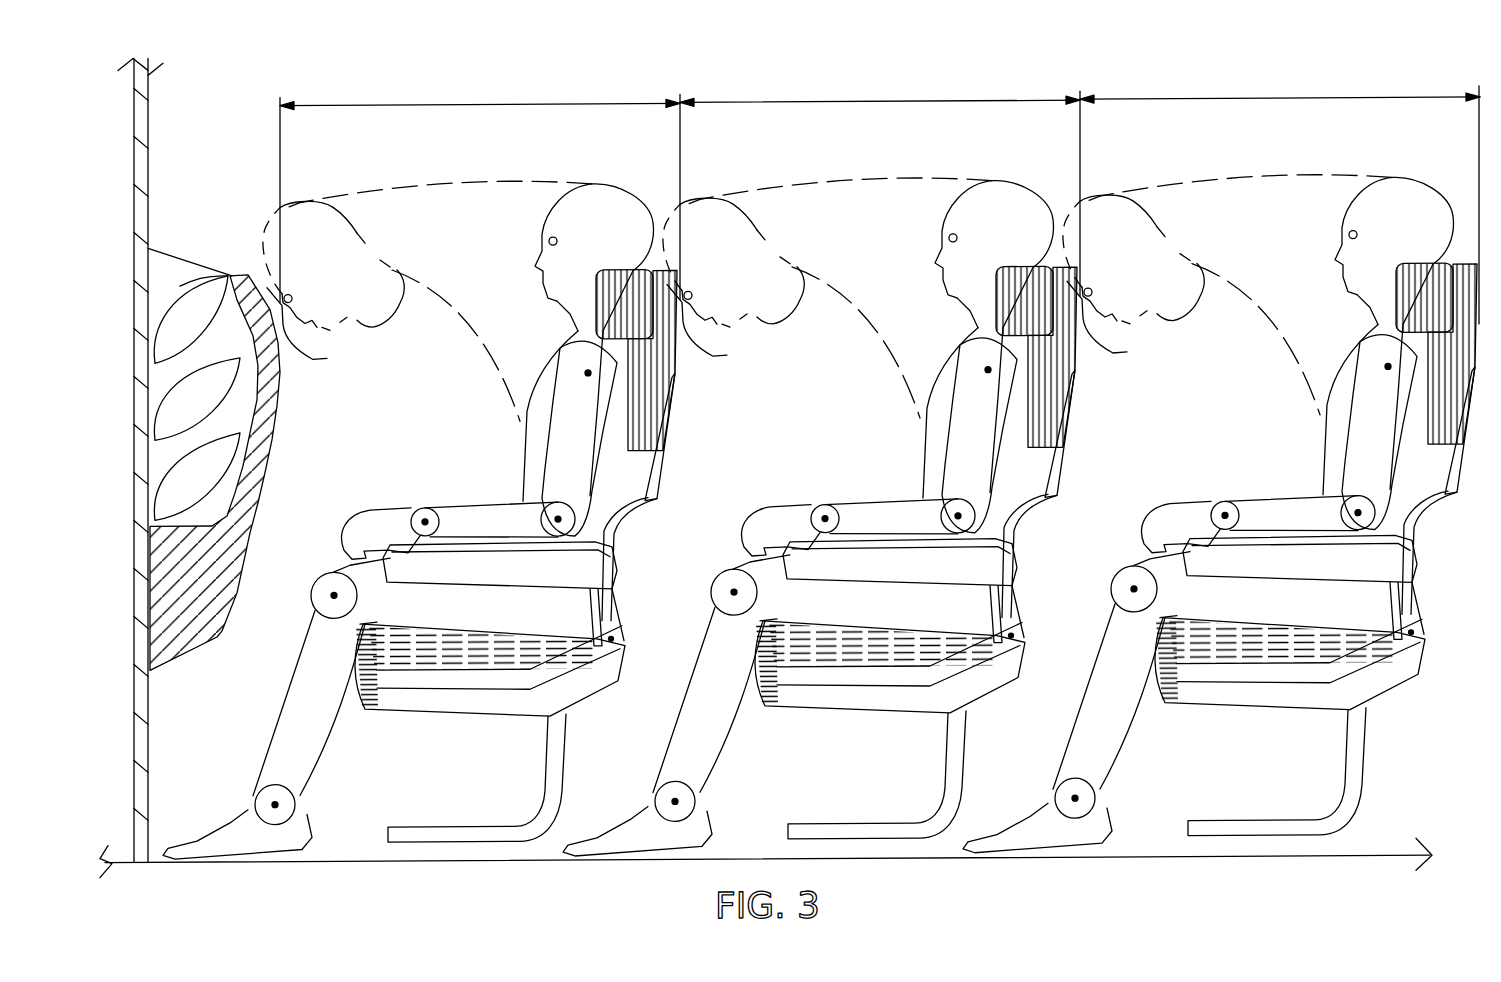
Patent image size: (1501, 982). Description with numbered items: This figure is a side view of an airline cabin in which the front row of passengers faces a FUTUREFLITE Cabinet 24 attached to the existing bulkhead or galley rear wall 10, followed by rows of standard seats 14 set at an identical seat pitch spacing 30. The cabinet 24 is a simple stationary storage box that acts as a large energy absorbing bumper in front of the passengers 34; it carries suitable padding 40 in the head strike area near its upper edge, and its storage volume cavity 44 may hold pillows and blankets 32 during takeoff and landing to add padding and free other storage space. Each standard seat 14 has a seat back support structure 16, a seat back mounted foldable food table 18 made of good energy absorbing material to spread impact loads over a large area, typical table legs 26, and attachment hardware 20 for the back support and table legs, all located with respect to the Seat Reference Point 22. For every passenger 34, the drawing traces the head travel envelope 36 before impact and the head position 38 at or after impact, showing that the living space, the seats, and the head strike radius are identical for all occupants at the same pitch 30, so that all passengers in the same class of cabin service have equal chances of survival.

The bulkhead or galley rear wall 10 is at (148, 187).
The standard seat 14 is at (890, 690).
The seat back support structure 16 is at (680, 372).
The seat back mounted foldable food table 18 is at (667, 433).
The attachment hardware for back support and table legs 20 is at (625, 613).
The Seat Reference Point (SRP) 22 is at (618, 640).
The FUTUREFLITE Cabinet 24 is at (280, 438).
The legs, food table 26 is at (653, 507).
The seat pitch spacing 30 is at (880, 191).
The pillows and blankets stored in cabinet 32 is at (167, 383).
The passenger 34 is at (997, 231).
The head travel envelope before impact 36 is at (837, 174).
The head position at or after impact 38 is at (733, 236).
The padding in the head strike area 40 is at (719, 329).
The cabinet storage volume cavity 44 is at (172, 273).